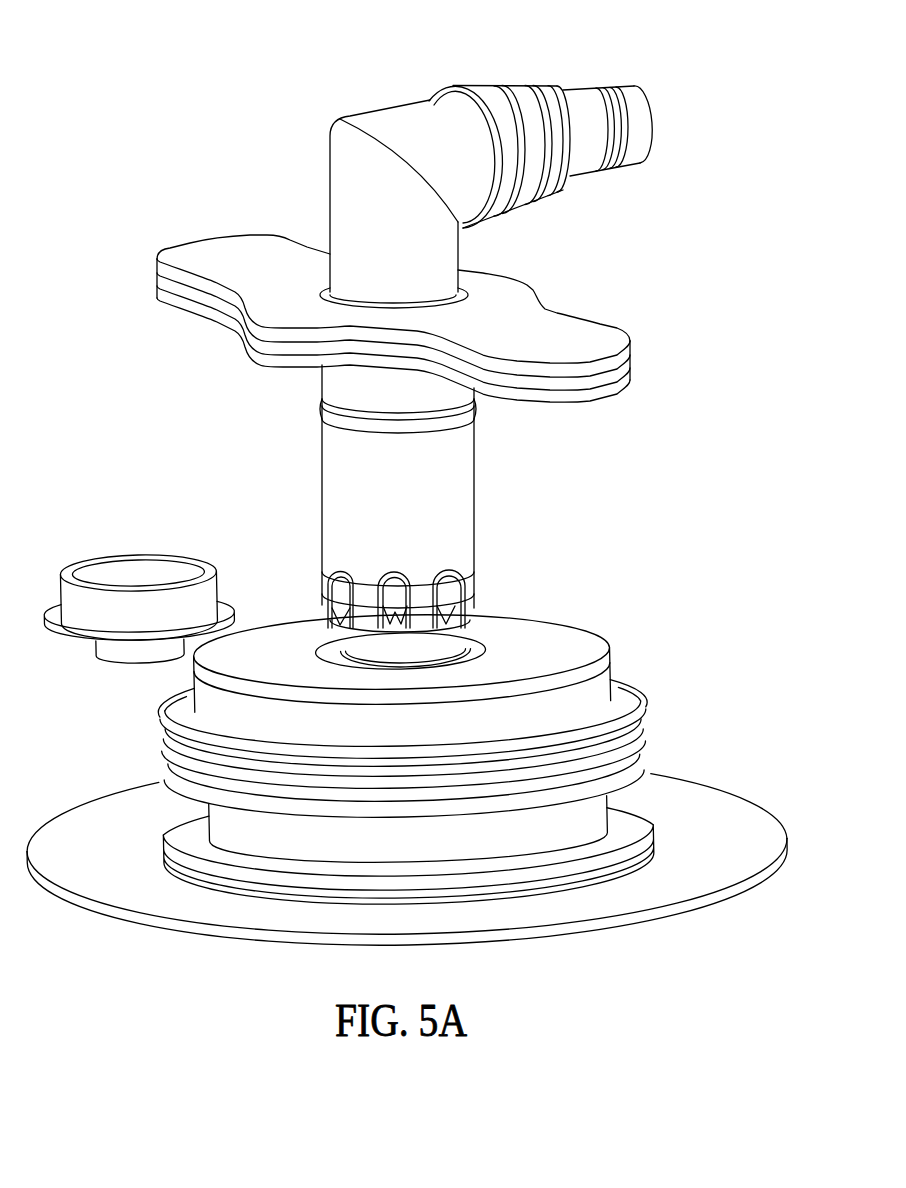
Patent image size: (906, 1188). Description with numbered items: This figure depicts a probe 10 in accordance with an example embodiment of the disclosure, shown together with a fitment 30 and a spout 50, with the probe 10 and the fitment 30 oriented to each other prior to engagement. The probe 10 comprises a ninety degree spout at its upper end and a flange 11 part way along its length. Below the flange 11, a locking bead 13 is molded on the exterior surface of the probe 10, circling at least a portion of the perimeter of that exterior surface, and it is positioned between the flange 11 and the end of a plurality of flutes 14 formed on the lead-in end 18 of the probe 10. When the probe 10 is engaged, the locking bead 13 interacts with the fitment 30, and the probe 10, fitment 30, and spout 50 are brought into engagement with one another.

The probe 10 is at (264, 74).
The flange 11 is at (570, 330).
The locking bead 13 is at (358, 425).
The plurality of flutes 14 is at (395, 591).
The lead-in end 18 is at (326, 597).
The fitment 30 is at (562, 638).
The spout 50 is at (733, 787).